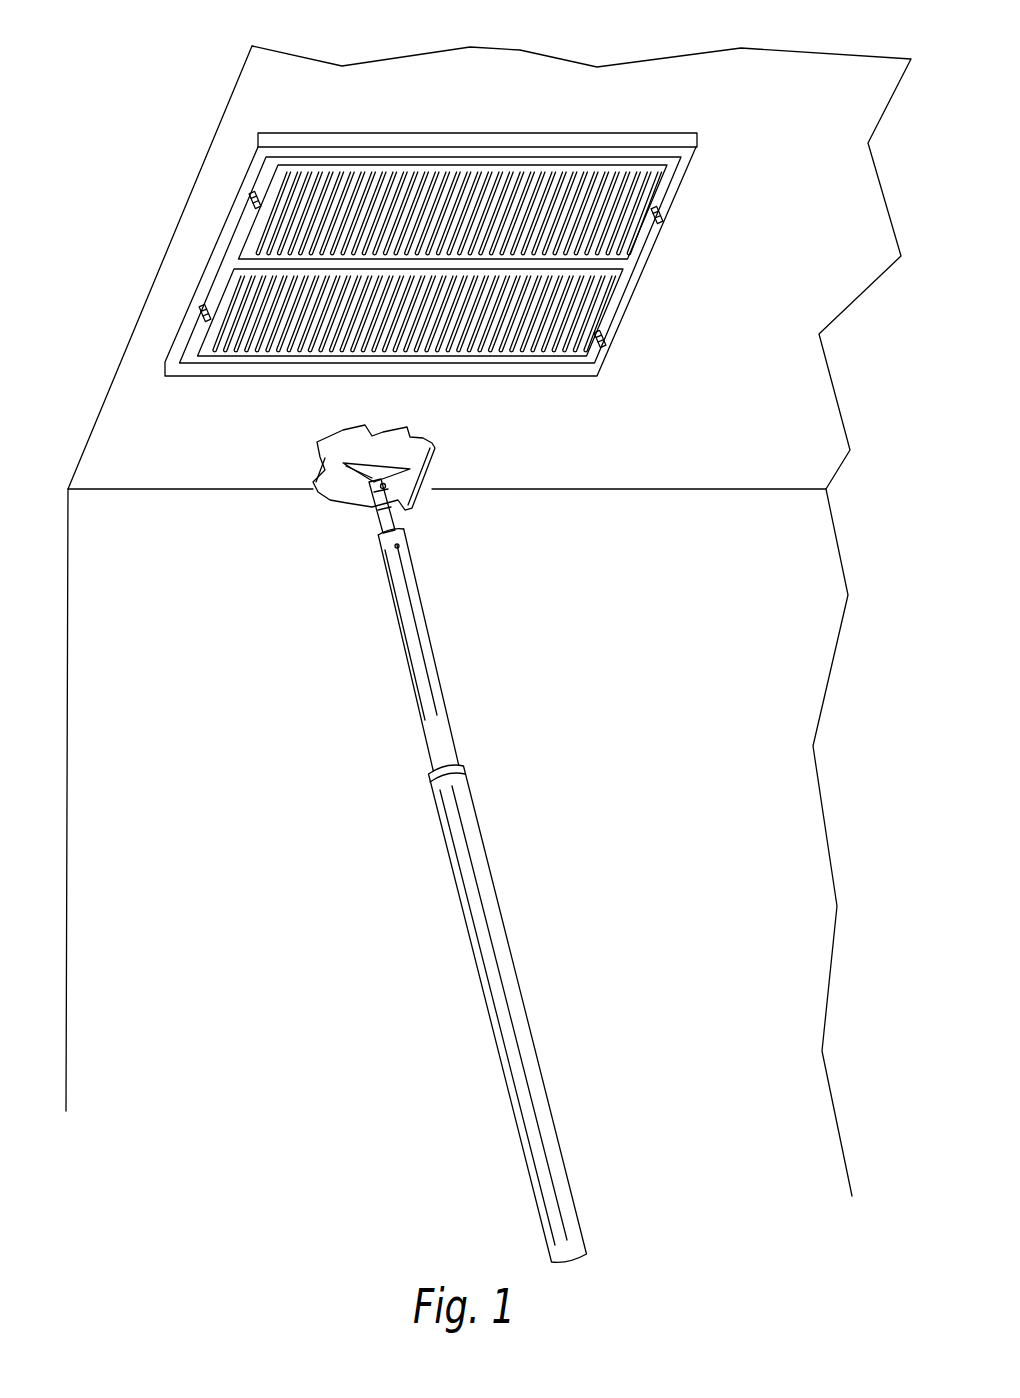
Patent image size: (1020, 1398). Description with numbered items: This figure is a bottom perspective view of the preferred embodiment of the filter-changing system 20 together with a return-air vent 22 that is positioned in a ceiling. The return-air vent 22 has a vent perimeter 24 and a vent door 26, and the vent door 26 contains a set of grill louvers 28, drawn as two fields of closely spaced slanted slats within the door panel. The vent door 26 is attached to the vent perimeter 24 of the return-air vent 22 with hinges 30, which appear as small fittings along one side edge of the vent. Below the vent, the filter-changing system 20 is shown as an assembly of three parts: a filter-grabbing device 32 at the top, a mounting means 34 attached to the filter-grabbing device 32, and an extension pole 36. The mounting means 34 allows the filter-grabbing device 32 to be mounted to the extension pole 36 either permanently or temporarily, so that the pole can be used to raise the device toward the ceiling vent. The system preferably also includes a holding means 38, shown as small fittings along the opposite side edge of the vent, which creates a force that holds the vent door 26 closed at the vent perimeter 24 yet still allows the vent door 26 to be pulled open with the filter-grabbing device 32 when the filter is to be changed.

The filter-changing system 20 is at (428, 843).
The return-air vent 22 is at (403, 217).
The vent perimeter 24 is at (440, 133).
The vent door 26 is at (236, 270).
The grill louvers 28 is at (202, 355).
The hinges 30 is at (662, 217).
The filter-grabbing device 32 is at (345, 495).
The mounting means 34 is at (360, 527).
The extension pole 36 is at (428, 672).
The holding means 38 is at (252, 203).